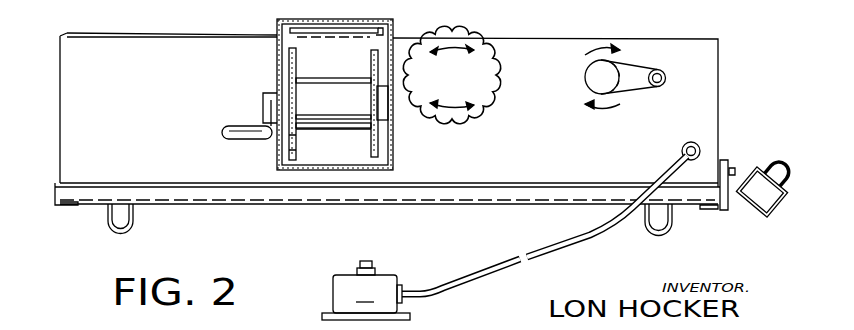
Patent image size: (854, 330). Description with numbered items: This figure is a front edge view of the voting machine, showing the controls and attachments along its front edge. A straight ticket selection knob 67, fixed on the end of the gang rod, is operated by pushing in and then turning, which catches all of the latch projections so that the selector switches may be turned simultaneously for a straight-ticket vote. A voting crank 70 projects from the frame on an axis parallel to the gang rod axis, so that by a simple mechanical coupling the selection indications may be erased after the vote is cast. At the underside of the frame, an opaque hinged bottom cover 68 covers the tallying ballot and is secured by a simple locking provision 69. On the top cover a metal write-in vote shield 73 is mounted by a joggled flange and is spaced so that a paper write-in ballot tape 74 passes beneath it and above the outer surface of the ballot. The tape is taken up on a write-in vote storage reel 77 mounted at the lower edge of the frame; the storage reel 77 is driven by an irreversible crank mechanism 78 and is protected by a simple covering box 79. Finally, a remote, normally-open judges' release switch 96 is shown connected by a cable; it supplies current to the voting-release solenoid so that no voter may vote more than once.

The straight ticket selection knob 67 is at (498, 68).
The hinged bottom cover 68 is at (182, 205).
The locking provision 69 is at (752, 214).
The voting crank 70 is at (667, 76).
The write-in vote shield 73 is at (356, 28).
The write-in ballot tape 74 is at (329, 69).
The write-in vote storage reel 77 is at (297, 147).
The irreversible crank mechanism 78 is at (233, 126).
The covering box 79 is at (277, 63).
The judges' release switch 96 is at (511, 160).